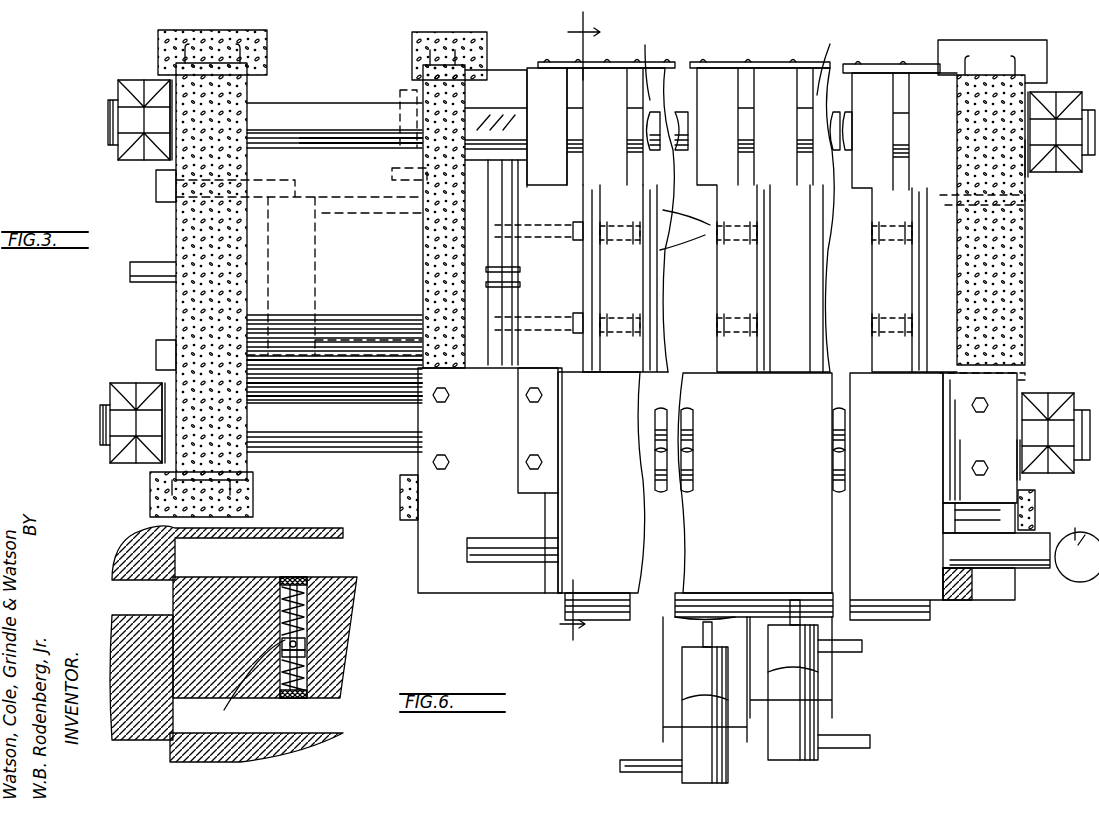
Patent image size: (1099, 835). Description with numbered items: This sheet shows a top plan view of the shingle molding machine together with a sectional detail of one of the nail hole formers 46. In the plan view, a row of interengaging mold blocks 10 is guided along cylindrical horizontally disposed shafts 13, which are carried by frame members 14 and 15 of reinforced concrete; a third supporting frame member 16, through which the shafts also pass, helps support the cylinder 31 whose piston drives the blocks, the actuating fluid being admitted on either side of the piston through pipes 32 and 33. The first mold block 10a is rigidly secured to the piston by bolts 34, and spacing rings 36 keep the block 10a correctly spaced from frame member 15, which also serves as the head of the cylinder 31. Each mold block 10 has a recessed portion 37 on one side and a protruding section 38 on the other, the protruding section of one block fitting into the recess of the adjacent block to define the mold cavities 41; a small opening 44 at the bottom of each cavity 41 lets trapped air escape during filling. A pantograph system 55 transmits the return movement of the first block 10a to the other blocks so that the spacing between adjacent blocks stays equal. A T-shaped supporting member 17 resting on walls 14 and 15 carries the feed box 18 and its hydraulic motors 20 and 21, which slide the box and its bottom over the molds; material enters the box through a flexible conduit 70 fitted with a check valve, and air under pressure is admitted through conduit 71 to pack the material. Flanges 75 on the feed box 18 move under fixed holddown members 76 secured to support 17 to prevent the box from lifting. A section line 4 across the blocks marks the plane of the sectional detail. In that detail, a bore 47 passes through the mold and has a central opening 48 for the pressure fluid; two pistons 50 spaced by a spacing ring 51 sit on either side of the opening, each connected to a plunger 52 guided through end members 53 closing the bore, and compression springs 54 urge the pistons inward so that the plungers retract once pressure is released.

In FIG. 3, the section line 4 is at (578, 337).
In FIG. 3, the mold block 10 is at (630, 80).
In FIG. 6, the mold block 10 is at (112, 630).
In FIG. 3, the first mold block 10a is at (532, 92).
In FIG. 3, the shafts 13 is at (322, 112).
In FIG. 3, the frame member 14 is at (1015, 348).
In FIG. 3, the frame member 15 is at (428, 288).
In FIG. 3, the third supporting frame member 16 is at (176, 304).
In FIG. 3, the T-shaped supporting member 17 is at (418, 535).
In FIG. 6, the T-shaped supporting member 17 is at (420, 545).
In FIG. 3, the feed box 18 is at (688, 540).
In FIG. 3, the hydraulic motor 20 is at (822, 685).
In FIG. 3, the hydraulic motor 21 is at (690, 685).
In FIG. 3, the cylinder 31 is at (340, 165).
In FIG. 3, the pipe 32 is at (128, 270).
In FIG. 3, the pipe 33 is at (405, 88).
In FIG. 3, the bolts 34 is at (541, 226).
In FIG. 3, the spacing rings 36 is at (498, 239).
In FIG. 3, the recessed portion 37 is at (685, 226).
In FIG. 6, the recessed portion 37 is at (305, 560).
In FIG. 3, the protruding section 38 is at (680, 248).
In FIG. 6, the protruding section 38 is at (195, 590).
In FIG. 3, the mold cavity 41 is at (820, 209).
In FIG. 6, the mold cavity 41 is at (300, 540).
In FIG. 3, the small opening 44 is at (583, 350).
In FIG. 3, the nail hole formers 46 is at (756, 280).
In FIG. 6, the nail hole formers 46 is at (314, 582).
In FIG. 3, the bore 47 is at (750, 302).
In FIG. 6, the bore 47 is at (306, 640).
In FIG. 6, the opening 48 is at (305, 646).
In FIG. 6, the pistons 50 is at (307, 652).
In FIG. 6, the spacing ring 51 is at (241, 683).
In FIG. 6, the plunger 52 is at (294, 585).
In FIG. 6, the members 53 is at (282, 578).
In FIG. 6, the compression springs 54 is at (310, 605).
In FIG. 3, the pantograph system 55 is at (737, 61).
In FIG. 3, the conduit 70 is at (1048, 540).
In FIG. 3, the conduit 71 is at (506, 542).
In FIG. 3, the flanges 75 is at (548, 570).
In FIG. 3, the holddown members 76 is at (518, 422).